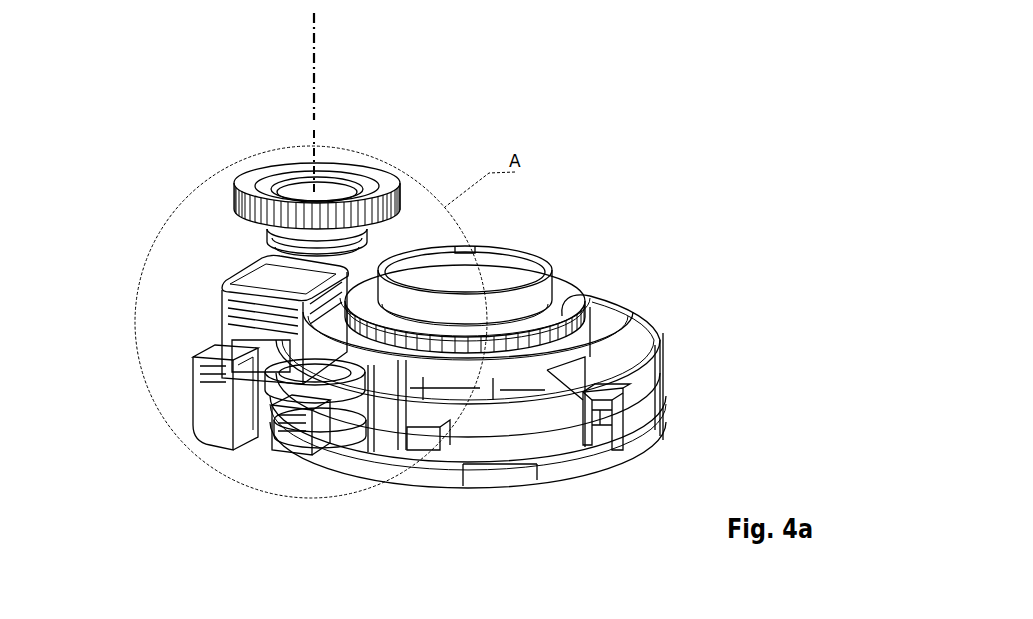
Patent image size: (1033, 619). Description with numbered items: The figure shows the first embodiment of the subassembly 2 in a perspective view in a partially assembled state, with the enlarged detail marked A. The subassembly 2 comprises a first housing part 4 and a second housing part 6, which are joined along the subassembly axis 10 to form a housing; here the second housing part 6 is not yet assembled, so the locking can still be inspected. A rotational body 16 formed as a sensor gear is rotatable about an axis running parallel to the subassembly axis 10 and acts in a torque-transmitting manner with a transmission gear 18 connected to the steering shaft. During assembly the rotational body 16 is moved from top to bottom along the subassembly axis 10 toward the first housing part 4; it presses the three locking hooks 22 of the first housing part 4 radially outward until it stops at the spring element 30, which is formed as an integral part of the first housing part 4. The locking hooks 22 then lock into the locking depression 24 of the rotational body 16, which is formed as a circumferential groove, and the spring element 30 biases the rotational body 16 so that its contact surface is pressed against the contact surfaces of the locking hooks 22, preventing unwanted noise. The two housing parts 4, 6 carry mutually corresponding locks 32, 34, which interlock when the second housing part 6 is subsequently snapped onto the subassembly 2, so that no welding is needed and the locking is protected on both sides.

The subassembly 2 is at (660, 61).
The subassembly axis 10 is at (314, 50).
The rotational body 16 is at (240, 180).
The locking depression 24 is at (263, 234).
The locking hooks 22 is at (272, 357).
The spring element 30 is at (360, 398).
The transmission gear 18 is at (565, 318).
The first housing part 4 is at (617, 352).
The lock 34 is at (620, 399).
The lock 32 is at (607, 413).
The second housing part 6 is at (650, 428).